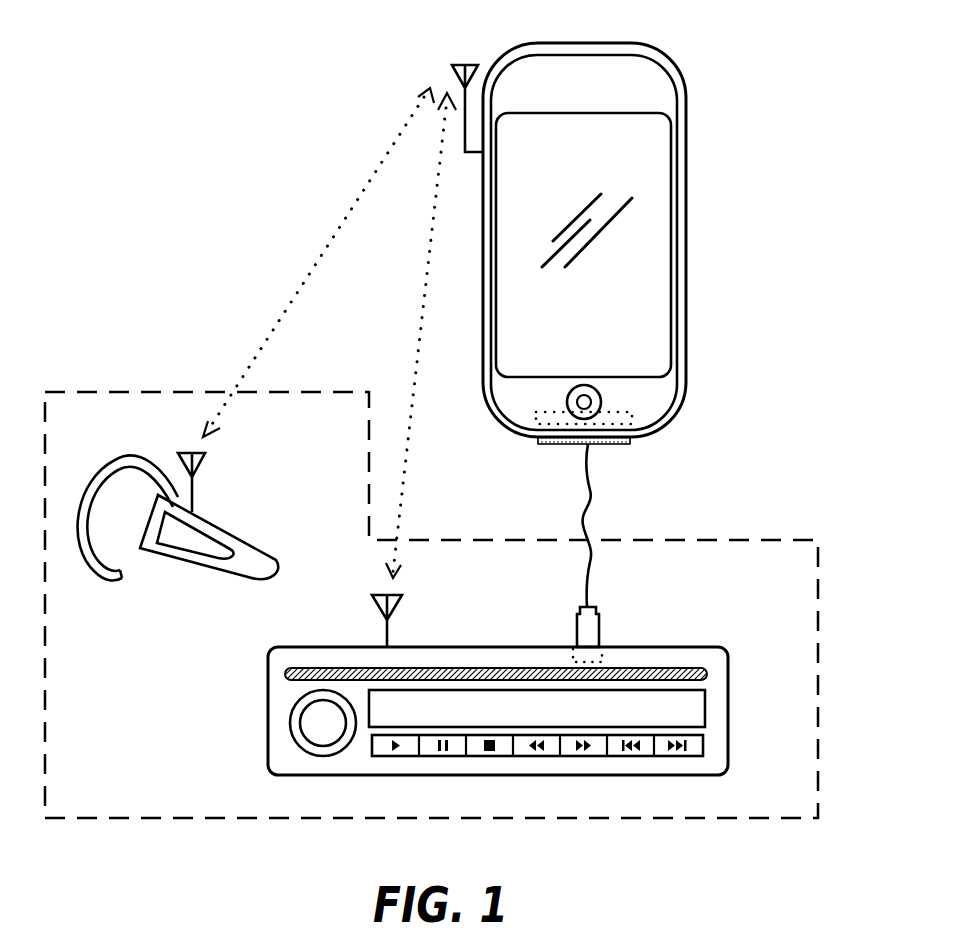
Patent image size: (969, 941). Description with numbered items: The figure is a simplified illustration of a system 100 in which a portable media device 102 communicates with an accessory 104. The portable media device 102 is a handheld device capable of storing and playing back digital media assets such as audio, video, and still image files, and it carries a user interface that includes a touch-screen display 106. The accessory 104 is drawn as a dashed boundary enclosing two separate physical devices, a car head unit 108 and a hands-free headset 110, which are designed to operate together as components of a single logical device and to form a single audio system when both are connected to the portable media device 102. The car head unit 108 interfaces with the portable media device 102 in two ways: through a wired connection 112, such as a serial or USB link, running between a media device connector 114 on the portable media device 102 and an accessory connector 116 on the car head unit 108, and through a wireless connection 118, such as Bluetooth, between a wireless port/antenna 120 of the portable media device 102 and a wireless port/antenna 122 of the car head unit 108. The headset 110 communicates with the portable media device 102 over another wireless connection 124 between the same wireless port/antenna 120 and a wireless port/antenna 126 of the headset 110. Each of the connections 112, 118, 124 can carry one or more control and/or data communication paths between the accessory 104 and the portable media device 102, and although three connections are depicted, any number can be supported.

The system 100 is at (151, 169).
The portable media device 102 is at (657, 44).
The accessory 104 is at (743, 540).
The touch-screen display 106 is at (657, 110).
The car head unit 108 is at (690, 647).
The hands-free headset 110 is at (251, 536).
The wired connection 112 is at (585, 518).
The media device connector 114 is at (627, 412).
The accessory connector 116 is at (605, 657).
The wireless connection 118 is at (424, 305).
The wireless port/antenna 120 is at (457, 65).
The wireless port/antenna 122 is at (397, 596).
The wireless connection 124 is at (352, 212).
The wireless port/antenna 126 is at (186, 452).